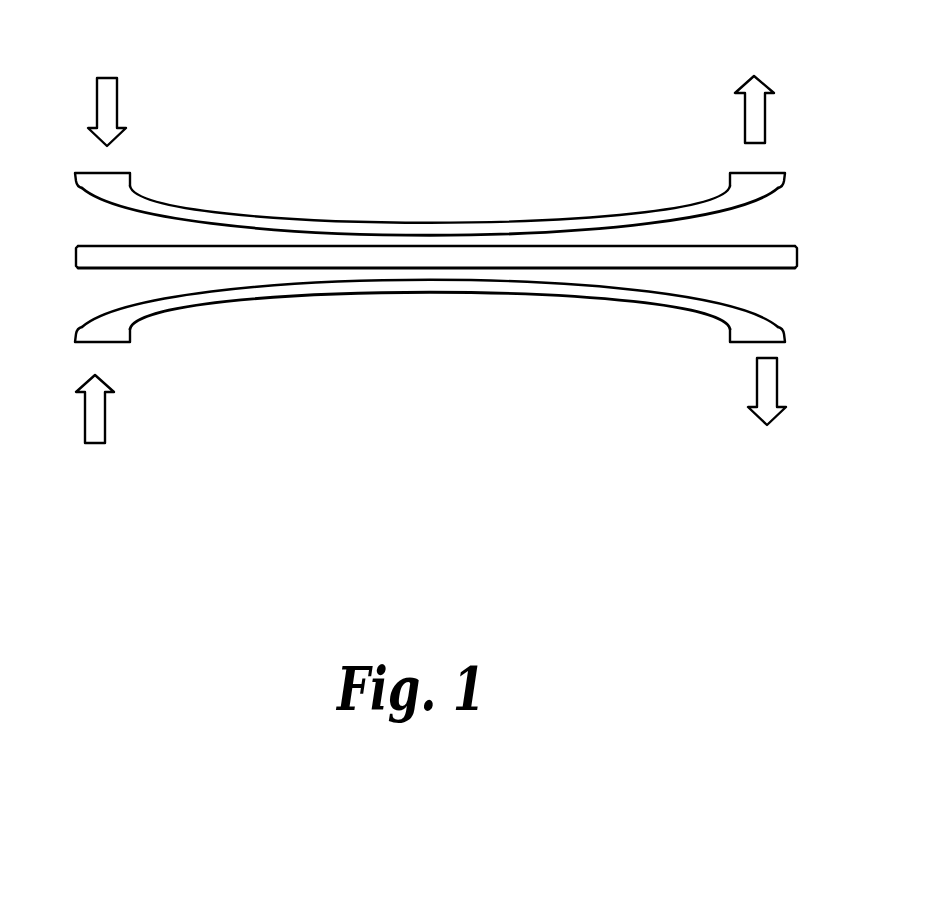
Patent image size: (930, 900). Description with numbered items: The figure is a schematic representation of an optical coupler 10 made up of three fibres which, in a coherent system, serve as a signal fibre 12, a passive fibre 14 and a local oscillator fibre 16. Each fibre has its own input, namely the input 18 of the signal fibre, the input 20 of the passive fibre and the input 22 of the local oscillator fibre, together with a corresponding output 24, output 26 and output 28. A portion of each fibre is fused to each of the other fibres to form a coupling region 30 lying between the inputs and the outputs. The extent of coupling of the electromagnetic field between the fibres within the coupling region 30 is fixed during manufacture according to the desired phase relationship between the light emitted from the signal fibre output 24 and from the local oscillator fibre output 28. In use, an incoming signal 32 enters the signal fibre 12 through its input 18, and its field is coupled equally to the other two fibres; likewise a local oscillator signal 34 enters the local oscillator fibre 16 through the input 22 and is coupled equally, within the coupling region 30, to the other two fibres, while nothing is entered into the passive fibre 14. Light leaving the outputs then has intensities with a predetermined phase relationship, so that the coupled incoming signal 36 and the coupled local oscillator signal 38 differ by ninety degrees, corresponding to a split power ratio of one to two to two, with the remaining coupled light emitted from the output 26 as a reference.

The optical coupler 10 is at (378, 172).
The signal fibre 12 is at (250, 217).
The passive fibre 14 is at (438, 258).
The local oscillator fibre 16 is at (255, 292).
The signal fibre input 18 is at (113, 176).
The passive fibre input 20 is at (90, 262).
The local oscillator fibre input 22 is at (117, 342).
The signal fibre output 24 is at (737, 179).
The passive fibre output 26 is at (773, 253).
The local oscillator fibre output 28 is at (733, 329).
The coupling region 30 is at (399, 290).
The incoming signal 32 is at (105, 92).
The local oscillator signal 34 is at (97, 424).
The coupled incoming signal 36 is at (755, 123).
The coupled local oscillator signal 38 is at (762, 392).